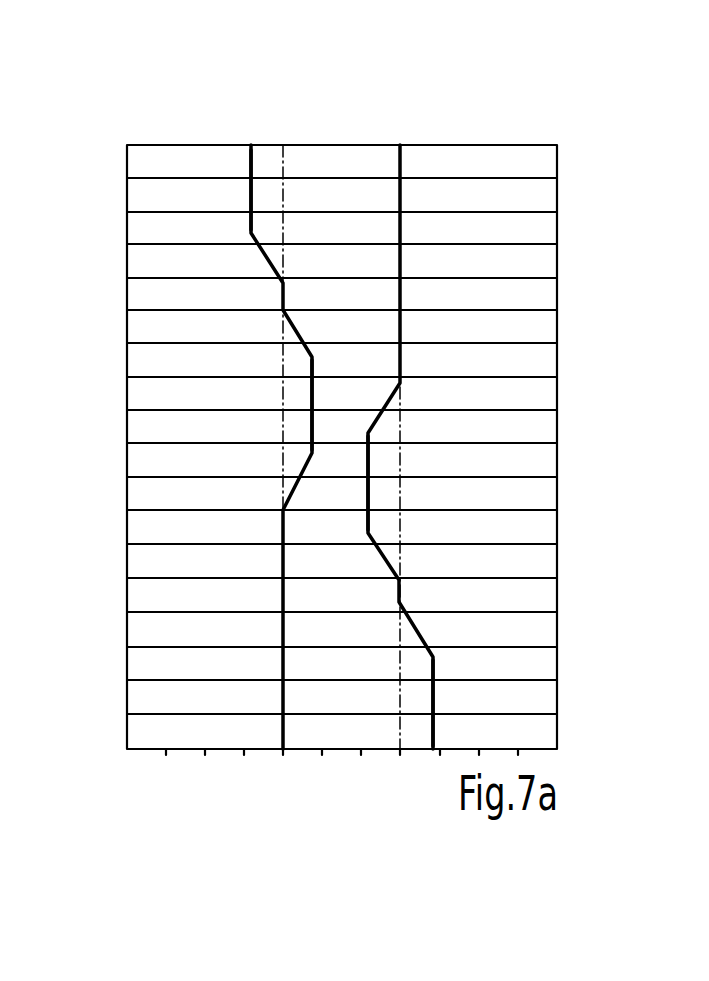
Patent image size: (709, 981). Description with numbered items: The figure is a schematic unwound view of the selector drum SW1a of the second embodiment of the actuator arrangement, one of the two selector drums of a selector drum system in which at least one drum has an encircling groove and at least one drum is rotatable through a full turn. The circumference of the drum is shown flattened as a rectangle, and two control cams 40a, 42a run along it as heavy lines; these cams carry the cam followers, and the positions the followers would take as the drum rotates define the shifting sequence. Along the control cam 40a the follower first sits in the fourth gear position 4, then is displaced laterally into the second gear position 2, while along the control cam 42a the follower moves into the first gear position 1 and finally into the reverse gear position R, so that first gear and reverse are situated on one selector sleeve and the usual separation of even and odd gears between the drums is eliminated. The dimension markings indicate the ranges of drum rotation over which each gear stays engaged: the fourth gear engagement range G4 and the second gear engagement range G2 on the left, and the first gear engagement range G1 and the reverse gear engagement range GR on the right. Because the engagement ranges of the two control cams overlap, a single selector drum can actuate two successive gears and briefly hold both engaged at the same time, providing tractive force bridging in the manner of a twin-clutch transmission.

The selector drum SW1a is at (522, 147).
The control cam 40a is at (252, 161).
The control cam 42a is at (398, 164).
The fourth gear position 4 is at (240, 190).
The second gear position 2 is at (321, 405).
The first gear position 1 is at (356, 483).
The reverse gear position R is at (441, 703).
The fourth gear engagement range G4 is at (97, 145).
The second gear engagement range G2 is at (100, 357).
The first gear engagement range G1 is at (563, 435).
The reverse gear engagement range GR is at (562, 658).